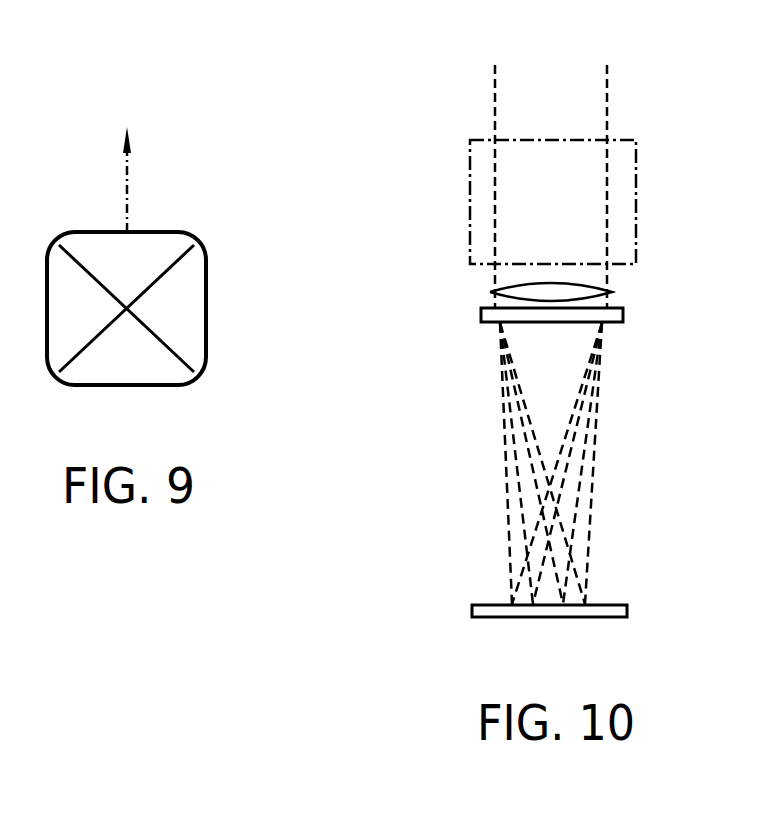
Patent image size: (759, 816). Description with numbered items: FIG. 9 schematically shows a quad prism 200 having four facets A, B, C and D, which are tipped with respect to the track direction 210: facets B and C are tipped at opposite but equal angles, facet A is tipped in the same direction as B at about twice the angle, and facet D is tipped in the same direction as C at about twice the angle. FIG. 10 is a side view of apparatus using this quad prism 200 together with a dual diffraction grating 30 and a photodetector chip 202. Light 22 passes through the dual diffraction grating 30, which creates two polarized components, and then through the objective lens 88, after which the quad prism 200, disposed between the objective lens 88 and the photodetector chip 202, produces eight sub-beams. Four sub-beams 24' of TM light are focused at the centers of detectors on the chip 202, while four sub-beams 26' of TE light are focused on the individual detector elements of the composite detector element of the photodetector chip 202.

In FIG. 9, the quad prism 200 is at (212, 252).
In FIG. 10, the quad prism 200 is at (482, 315).
In FIG. 9, the track direction 210 is at (127, 171).
In FIG. 10, the light beam 22 is at (493, 97).
In FIG. 10, the dual diffraction grating 30 is at (460, 201).
In FIG. 10, the objective lens 88 is at (493, 292).
In FIG. 10, the photodetector chip 202 is at (472, 607).
In FIG. 10, the sub-beams 24' is at (608, 463).
In FIG. 10, the sub-beams 26' is at (551, 463).